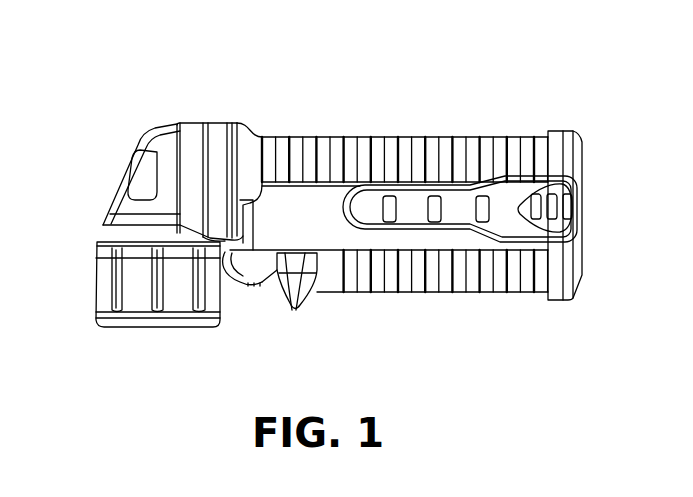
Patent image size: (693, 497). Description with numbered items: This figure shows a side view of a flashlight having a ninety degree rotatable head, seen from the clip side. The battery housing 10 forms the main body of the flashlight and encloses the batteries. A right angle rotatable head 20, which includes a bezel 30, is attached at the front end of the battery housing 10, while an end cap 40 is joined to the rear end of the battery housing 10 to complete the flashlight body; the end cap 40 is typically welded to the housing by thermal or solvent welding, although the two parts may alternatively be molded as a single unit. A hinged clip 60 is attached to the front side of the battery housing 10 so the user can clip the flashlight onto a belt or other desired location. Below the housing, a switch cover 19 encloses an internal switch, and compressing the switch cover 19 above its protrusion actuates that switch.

The battery housing 10 is at (351, 137).
The switch cover 19 is at (297, 312).
The right angle rotatable head 20 is at (117, 196).
The bezel 30 is at (95, 283).
The end cap 40 is at (580, 157).
The hinged clip 60 is at (459, 207).